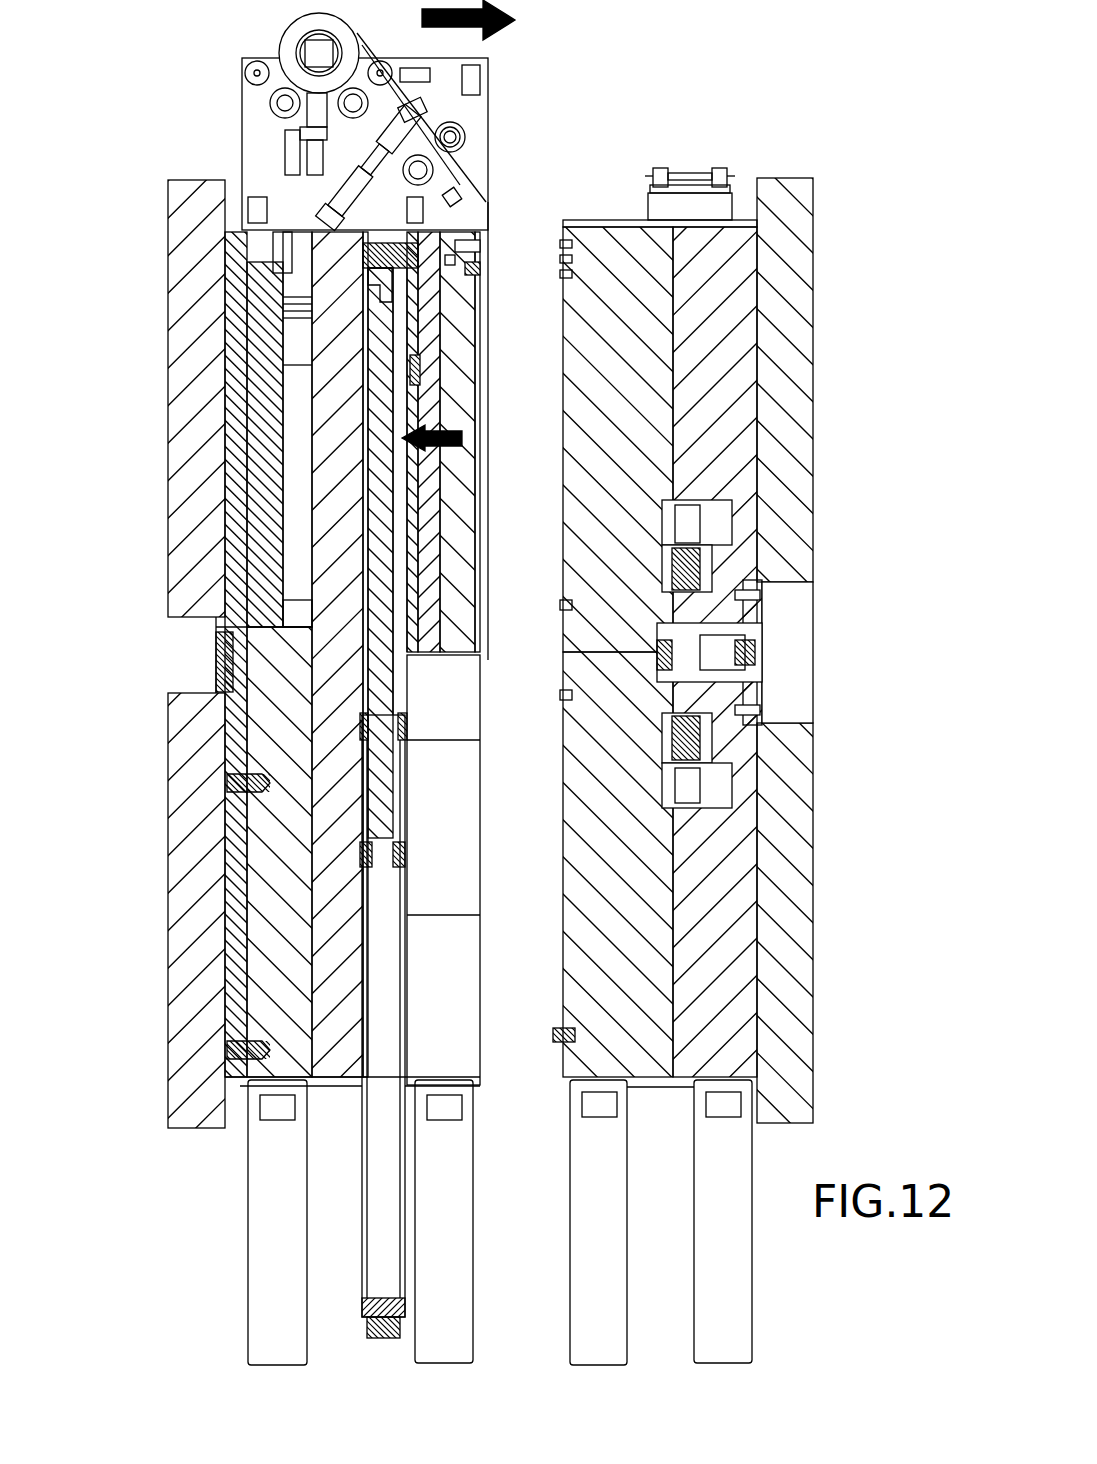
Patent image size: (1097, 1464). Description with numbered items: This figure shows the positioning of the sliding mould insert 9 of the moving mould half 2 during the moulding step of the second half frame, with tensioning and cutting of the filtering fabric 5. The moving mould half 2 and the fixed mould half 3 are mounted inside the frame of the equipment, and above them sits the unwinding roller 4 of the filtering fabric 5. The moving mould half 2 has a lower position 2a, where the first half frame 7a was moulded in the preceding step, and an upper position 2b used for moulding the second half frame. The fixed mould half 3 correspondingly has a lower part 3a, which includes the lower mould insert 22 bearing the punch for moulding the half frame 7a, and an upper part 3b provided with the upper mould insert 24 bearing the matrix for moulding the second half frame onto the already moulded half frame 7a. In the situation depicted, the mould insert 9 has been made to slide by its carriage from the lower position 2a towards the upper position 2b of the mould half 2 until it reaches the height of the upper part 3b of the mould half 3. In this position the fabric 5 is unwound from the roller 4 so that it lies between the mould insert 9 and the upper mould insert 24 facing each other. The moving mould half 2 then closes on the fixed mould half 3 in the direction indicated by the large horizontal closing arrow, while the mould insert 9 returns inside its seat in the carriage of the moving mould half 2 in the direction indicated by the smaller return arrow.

The moving mould half 2 is at (170, 288).
The lower position of the mould half 2a is at (197, 918).
The upper position of the mould half 2b is at (197, 367).
The fixed mould half 3 is at (816, 210).
The lower part of the fixed mould half 3a is at (778, 893).
The upper part of the fixed mould half 3b is at (780, 360).
The unwinding roller 4 is at (290, 45).
The filtering fabric 5 is at (489, 163).
The half frame 7a is at (455, 473).
The mould insert 9 is at (463, 263).
The lower mould insert 22 is at (573, 895).
The upper mould insert 24 is at (592, 378).